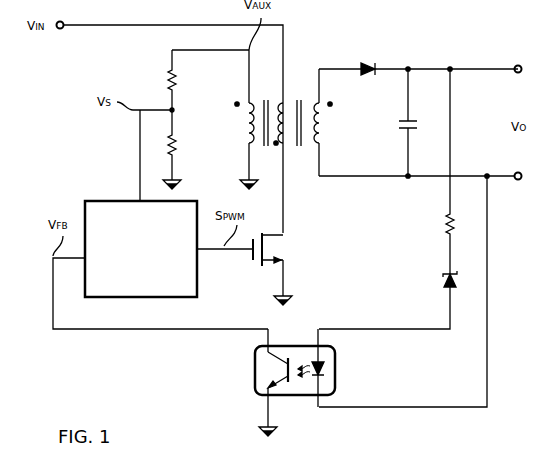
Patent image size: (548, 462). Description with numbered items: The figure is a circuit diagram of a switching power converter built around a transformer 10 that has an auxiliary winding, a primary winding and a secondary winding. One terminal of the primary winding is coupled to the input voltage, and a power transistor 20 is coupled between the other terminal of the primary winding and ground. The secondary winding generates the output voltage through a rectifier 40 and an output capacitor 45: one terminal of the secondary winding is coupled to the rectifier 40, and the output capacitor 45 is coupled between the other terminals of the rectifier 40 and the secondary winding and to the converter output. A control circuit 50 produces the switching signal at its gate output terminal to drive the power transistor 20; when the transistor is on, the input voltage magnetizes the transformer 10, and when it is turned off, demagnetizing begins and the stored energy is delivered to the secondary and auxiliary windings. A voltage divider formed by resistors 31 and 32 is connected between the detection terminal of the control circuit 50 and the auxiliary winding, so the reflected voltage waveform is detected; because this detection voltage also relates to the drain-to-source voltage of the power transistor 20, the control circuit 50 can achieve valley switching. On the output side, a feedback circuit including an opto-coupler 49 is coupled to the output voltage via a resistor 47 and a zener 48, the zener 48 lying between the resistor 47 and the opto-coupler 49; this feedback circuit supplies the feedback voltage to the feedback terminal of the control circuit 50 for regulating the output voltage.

The transformer 10 is at (306, 98).
The power transistor 20 is at (279, 264).
The resistor 31 is at (182, 80).
The resistor 32 is at (182, 145).
The rectifier 40 is at (368, 59).
The output capacitor 45 is at (418, 122).
The resistor 47 is at (460, 224).
The zener 48 is at (459, 281).
The opto-coupler 49 is at (295, 378).
The control circuit 50 is at (141, 241).